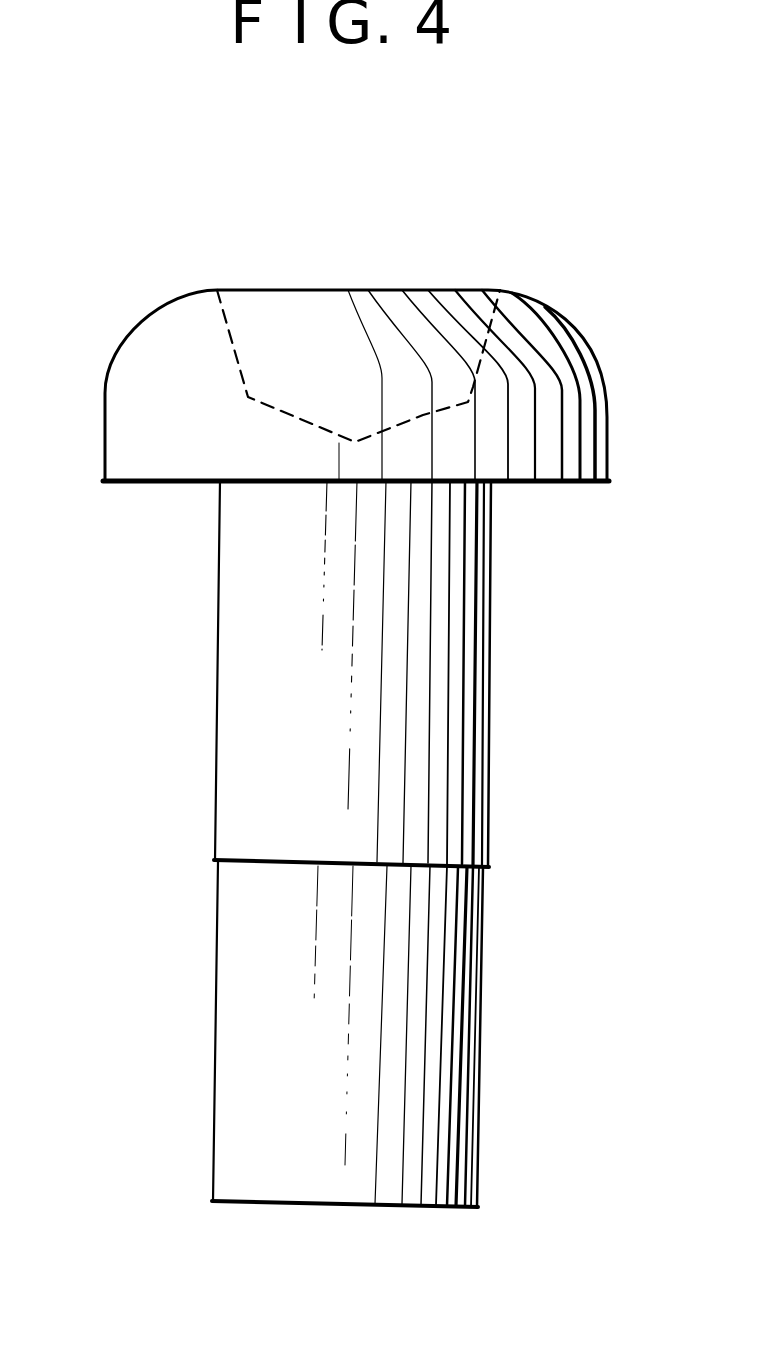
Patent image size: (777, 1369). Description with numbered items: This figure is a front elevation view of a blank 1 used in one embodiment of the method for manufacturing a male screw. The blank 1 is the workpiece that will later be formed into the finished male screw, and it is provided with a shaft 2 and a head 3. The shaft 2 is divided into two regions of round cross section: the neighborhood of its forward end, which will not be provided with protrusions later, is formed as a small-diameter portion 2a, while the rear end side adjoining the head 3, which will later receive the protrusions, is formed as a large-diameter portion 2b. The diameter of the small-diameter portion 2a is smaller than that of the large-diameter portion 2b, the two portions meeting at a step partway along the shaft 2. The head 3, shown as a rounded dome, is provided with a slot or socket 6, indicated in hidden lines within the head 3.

The blank 1 is at (152, 264).
The shaft 2 is at (232, 790).
The small-diameter portion 2a is at (478, 1038).
The large-diameter portion 2b is at (490, 672).
The head 3 is at (583, 358).
The slot or socket 6 is at (423, 415).